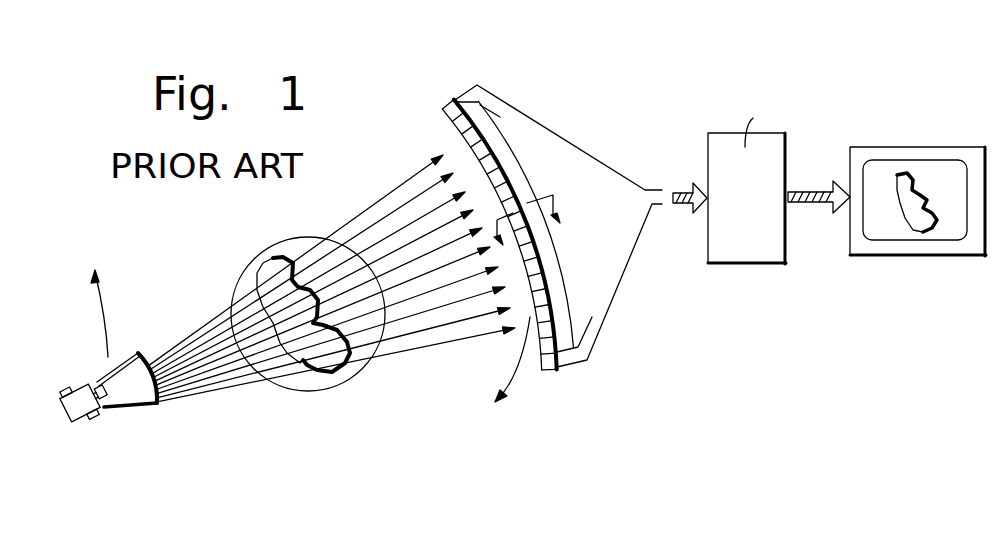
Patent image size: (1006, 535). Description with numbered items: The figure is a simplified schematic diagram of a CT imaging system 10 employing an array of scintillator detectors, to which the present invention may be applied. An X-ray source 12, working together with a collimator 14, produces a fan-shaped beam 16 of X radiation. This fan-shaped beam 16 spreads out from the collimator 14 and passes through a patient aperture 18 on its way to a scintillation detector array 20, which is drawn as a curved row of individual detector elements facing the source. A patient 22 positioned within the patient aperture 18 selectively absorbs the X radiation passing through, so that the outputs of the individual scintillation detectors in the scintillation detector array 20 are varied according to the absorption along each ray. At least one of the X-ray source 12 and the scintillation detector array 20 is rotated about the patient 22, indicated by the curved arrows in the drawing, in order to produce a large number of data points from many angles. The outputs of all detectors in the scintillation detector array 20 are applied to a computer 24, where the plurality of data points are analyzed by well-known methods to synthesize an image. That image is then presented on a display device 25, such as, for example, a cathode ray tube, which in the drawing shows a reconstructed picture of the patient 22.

The CT imaging system 10 is at (838, 37).
The X-ray source 12 is at (88, 412).
The collimator 14 is at (130, 407).
The fan-shaped beam 16 is at (197, 392).
The patient aperture 18 is at (232, 290).
The scintillation detector array 20 is at (443, 100).
The patient 22 is at (270, 280).
The computer 24 is at (743, 252).
The display device 25 is at (880, 180).